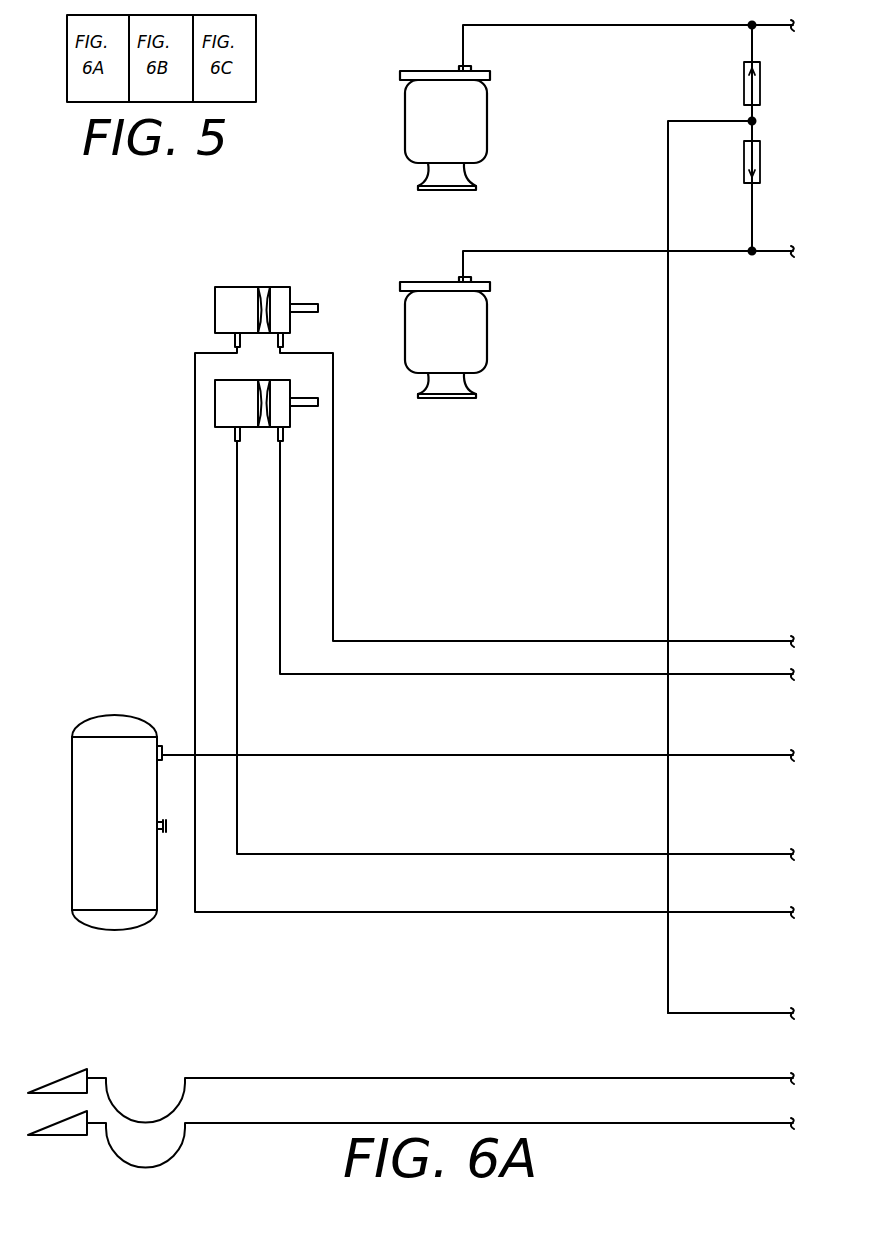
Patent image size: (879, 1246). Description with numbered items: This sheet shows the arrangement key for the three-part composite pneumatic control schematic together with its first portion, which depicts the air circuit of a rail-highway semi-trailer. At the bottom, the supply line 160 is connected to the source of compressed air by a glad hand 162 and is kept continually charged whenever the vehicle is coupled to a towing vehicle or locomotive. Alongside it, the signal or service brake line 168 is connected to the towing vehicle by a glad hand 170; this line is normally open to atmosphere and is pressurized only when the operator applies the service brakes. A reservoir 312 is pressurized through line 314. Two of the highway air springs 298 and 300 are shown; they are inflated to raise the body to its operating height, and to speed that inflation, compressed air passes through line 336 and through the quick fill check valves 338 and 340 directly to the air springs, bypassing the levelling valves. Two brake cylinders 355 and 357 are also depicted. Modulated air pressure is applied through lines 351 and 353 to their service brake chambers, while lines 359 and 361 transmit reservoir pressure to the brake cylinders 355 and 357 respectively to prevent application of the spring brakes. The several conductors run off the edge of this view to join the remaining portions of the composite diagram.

The highway air spring 298 is at (478, 133).
The highway air spring 300 is at (478, 332).
The quick fill check valve 338 is at (744, 84).
The quick fill check valve 340 is at (744, 168).
The brake cylinder 355 is at (220, 312).
The brake cylinder 357 is at (220, 407).
The line 359 is at (195, 516).
The line 351 is at (333, 512).
The line 353 is at (332, 677).
The line 361 is at (238, 706).
The reservoir 312 is at (76, 743).
The line 314 is at (508, 752).
The line 336 is at (766, 1008).
The glad hand 170 is at (74, 1075).
The signal or service brake line 168 is at (430, 1076).
The glad hand 162 is at (60, 1137).
The supply line 160 is at (670, 1123).